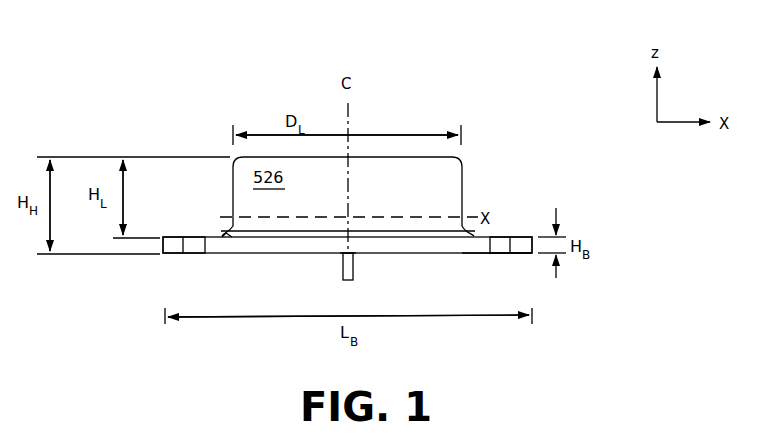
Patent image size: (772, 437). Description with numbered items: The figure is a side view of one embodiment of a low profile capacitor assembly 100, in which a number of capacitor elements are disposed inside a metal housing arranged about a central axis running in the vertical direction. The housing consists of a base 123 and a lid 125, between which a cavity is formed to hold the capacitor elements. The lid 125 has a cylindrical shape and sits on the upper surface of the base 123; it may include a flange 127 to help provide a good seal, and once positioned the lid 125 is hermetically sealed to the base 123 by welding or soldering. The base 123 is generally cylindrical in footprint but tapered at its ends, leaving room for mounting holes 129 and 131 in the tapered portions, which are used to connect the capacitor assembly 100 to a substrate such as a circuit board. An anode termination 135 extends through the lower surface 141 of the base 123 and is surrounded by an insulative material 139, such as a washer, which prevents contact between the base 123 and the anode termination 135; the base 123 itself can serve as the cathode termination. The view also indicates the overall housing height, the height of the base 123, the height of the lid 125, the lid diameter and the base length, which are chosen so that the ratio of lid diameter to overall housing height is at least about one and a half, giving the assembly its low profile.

The capacitor assembly 100 is at (192, 107).
The base 123 is at (267, 252).
The lid 125 is at (465, 178).
The flange 127 is at (222, 234).
The mounting hole 129 is at (195, 238).
The mounting hole 131 is at (505, 236).
The anode termination 135 is at (356, 270).
The insulative material 139 is at (355, 257).
The lower surface 141 is at (462, 254).